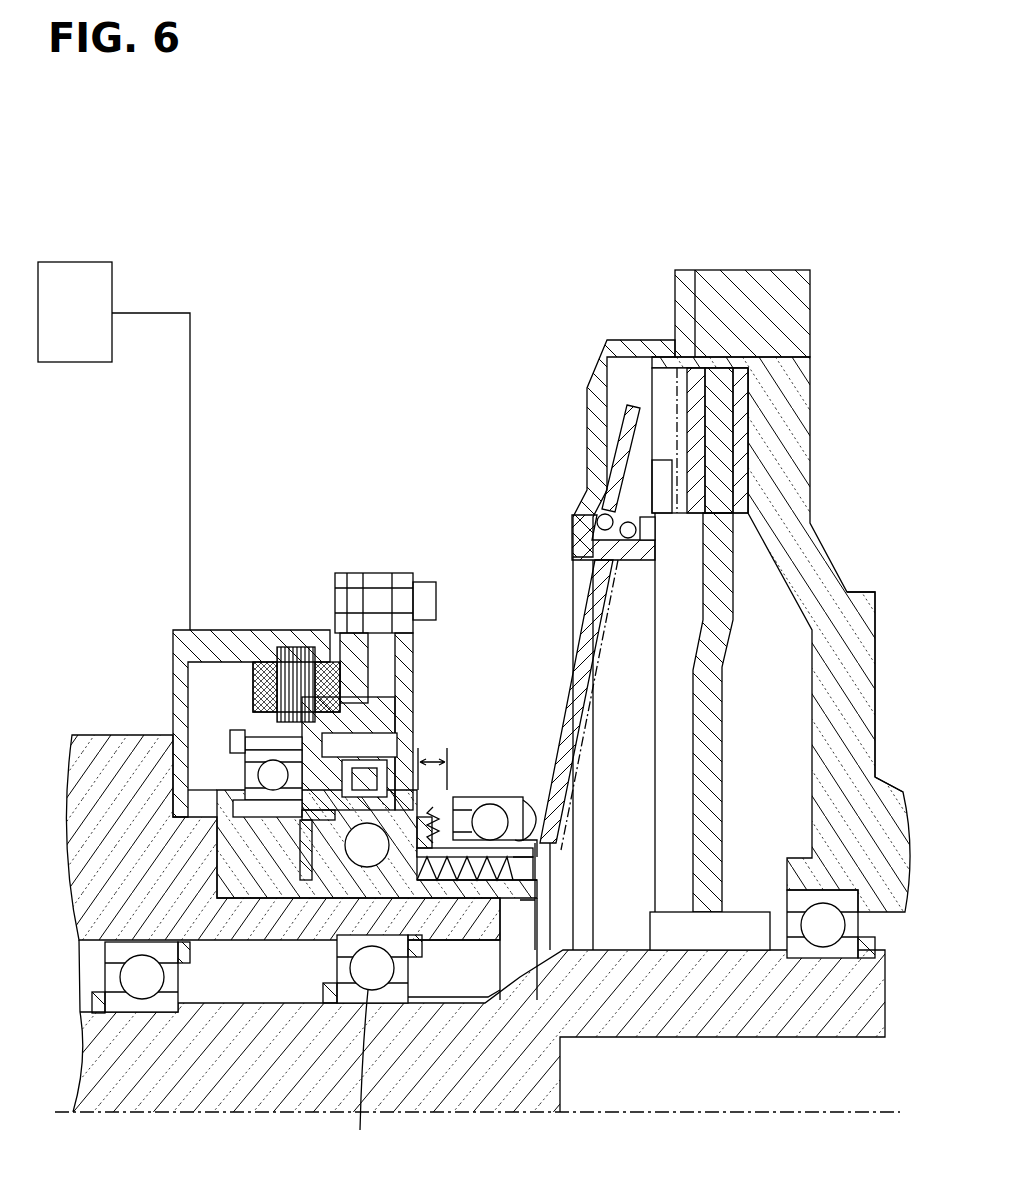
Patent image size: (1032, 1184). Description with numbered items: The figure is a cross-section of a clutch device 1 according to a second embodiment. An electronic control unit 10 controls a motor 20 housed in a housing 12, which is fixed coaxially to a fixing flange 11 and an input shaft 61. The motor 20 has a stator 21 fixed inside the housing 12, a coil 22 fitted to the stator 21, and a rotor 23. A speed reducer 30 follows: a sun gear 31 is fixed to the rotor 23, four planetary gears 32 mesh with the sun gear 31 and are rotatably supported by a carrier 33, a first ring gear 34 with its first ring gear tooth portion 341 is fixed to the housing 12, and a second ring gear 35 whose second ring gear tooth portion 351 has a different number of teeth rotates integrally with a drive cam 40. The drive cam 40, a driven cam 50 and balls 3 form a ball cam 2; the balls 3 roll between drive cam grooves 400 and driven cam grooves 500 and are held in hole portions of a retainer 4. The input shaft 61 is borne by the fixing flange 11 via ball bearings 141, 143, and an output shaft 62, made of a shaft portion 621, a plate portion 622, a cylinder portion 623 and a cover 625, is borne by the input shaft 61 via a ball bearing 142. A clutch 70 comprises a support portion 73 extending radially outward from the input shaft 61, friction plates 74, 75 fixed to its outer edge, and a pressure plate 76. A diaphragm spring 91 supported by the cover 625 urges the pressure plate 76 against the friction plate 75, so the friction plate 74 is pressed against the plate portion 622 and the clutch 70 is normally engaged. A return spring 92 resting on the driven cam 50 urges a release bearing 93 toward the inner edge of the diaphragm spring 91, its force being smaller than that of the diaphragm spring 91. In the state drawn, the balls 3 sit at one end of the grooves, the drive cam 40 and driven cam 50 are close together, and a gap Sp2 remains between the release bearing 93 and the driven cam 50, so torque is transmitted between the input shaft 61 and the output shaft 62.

The clutch device 1 is at (539, 208).
The ball cam 2 is at (300, 897).
The ball 3 is at (345, 845).
The retainer 4 is at (359, 1071).
The electronic control unit 10 is at (77, 262).
The fixing flange 11 is at (85, 918).
The housing 12 is at (224, 630).
The motor 20 is at (260, 700).
The stator 21 is at (265, 680).
The coil 22 is at (277, 650).
The rotor 23 is at (255, 720).
The speed reducer 30 is at (347, 610).
The sun gear 31 is at (240, 790).
The planetary gear 32 is at (245, 770).
The carrier 33 is at (250, 745).
The first ring gear 34 is at (360, 610).
The second ring gear 35 is at (383, 610).
The drive cam 40 is at (235, 803).
The driven cam 50 is at (290, 880).
The input shaft 61 is at (100, 1050).
The output shaft 62 is at (890, 856).
The clutch 70 is at (750, 402).
The support portion 73 is at (712, 730).
The friction plate 74 is at (720, 497).
The friction plate 75 is at (695, 460).
The pressure plate 76 is at (672, 424).
The diaphragm spring 91 is at (612, 480).
The return spring 92 is at (440, 815).
The release bearing 93 is at (494, 797).
The ball bearing 141 is at (140, 977).
The ball bearing 142 is at (828, 925).
The ball bearing 143 is at (373, 975).
The first ring gear tooth portion 341 is at (310, 640).
The second ring gear tooth portion 351 is at (283, 640).
The drive cam groove 400 is at (230, 815).
The driven cam groove 500 is at (300, 860).
The shaft portion 621 is at (888, 788).
The plate portion 622 is at (862, 712).
The cylinder portion 623 is at (722, 278).
The cover 625 is at (607, 340).
The gap Sp2 is at (433, 748).